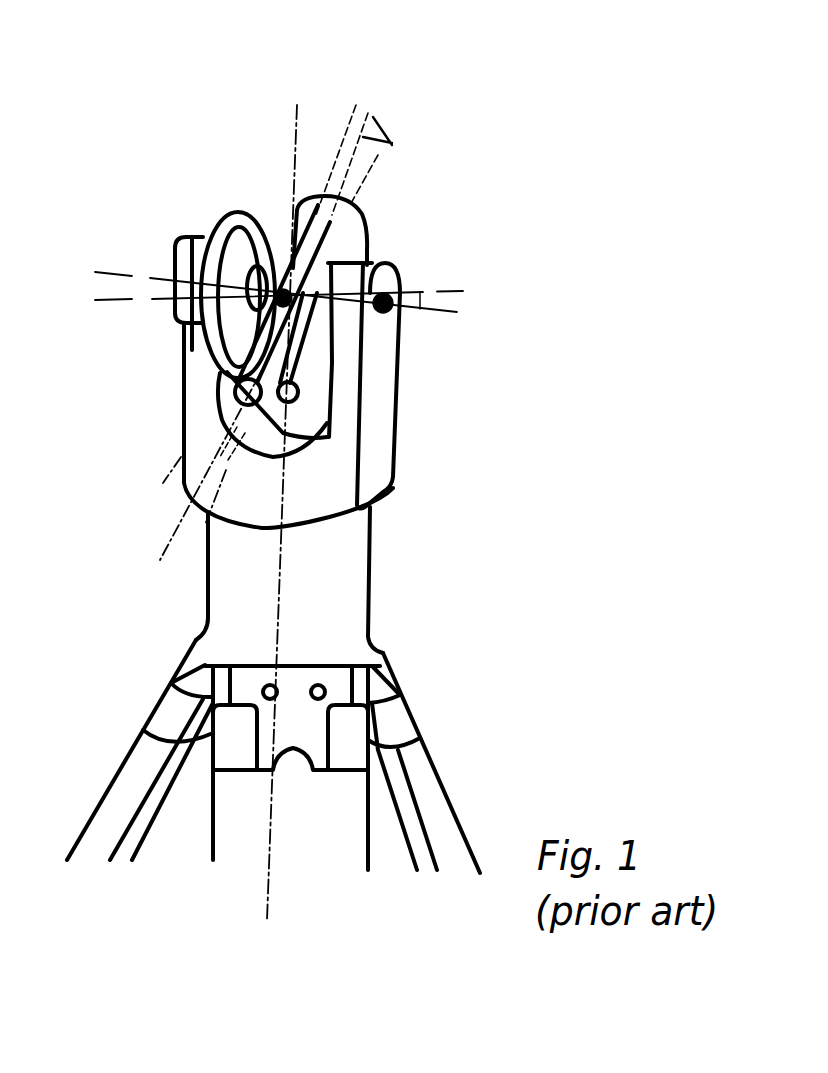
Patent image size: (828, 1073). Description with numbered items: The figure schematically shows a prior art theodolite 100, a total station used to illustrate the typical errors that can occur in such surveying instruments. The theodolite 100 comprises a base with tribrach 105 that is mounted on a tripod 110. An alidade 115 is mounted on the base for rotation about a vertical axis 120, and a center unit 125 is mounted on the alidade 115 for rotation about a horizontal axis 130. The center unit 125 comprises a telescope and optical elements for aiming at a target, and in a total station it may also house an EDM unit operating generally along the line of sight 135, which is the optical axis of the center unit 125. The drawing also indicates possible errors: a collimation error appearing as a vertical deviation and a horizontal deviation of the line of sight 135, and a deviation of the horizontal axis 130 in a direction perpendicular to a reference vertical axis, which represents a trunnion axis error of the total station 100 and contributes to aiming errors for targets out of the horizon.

The theodolite 100 is at (110, 122).
The base with tribrach 105 is at (365, 587).
The tripod 110 is at (440, 767).
The alidade 115 is at (383, 473).
The vertical axis 120 is at (293, 143).
The center unit 125 is at (305, 193).
The horizontal axis 130 is at (108, 270).
The line of sight 135 is at (173, 533).